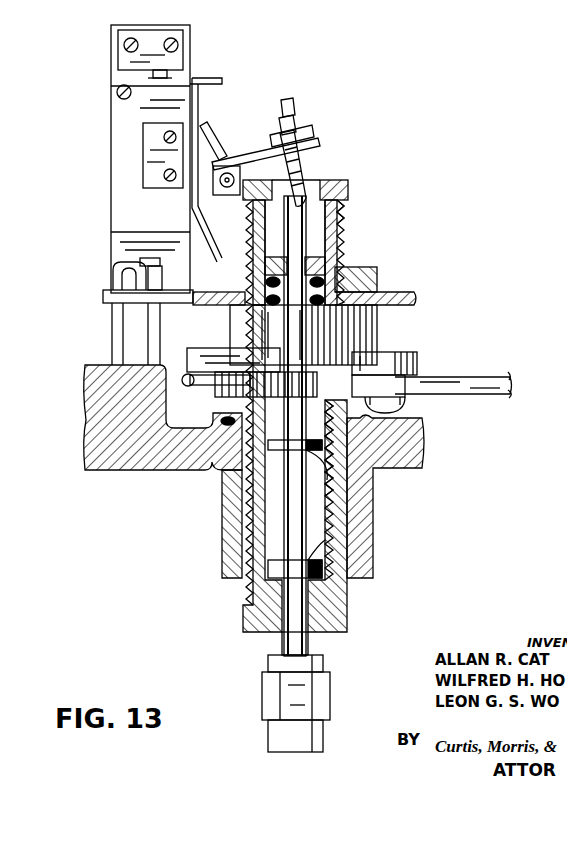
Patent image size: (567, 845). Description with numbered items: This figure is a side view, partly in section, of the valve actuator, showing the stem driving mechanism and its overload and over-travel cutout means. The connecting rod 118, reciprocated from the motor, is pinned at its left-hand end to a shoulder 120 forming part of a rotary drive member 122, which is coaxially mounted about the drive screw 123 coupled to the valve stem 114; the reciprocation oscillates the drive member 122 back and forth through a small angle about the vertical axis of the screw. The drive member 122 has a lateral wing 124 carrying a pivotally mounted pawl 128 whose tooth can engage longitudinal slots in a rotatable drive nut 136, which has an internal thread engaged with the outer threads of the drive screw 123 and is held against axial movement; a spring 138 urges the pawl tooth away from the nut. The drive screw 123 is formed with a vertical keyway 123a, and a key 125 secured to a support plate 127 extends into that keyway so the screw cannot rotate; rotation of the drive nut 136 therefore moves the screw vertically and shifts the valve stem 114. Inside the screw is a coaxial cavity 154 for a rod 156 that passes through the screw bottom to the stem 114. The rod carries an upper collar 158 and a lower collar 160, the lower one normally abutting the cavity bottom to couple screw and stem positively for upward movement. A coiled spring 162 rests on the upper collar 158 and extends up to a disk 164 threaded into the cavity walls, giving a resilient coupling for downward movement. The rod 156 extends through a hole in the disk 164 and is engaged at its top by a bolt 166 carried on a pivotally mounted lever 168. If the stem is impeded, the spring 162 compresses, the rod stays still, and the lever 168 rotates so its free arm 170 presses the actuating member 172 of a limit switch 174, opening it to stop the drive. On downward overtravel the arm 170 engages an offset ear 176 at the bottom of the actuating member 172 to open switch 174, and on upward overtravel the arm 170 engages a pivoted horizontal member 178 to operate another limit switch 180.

The valve stem 114 is at (331, 688).
The connecting rod 118 is at (480, 392).
The shoulder 120 is at (418, 357).
The rotary drive member 122 is at (380, 345).
The drive screw 123 is at (347, 612).
The vertical keyway 123a is at (347, 215).
The lateral wing 124 is at (245, 352).
The key 125 is at (360, 266).
The support plate 127 is at (394, 292).
The pawl 128 is at (178, 470).
The rotatable drive nut 136 is at (388, 402).
The spring 138 is at (184, 376).
The coaxial cavity 154 is at (275, 540).
The rod 156 is at (284, 515).
The upper collar 158 is at (345, 498).
The lower collar 160 is at (330, 545).
The coiled spring 162 is at (377, 330).
The disk 164 is at (252, 262).
The bolt 166 is at (305, 162).
The lever 168 is at (250, 145).
The free arm 170 is at (220, 150).
The actuating member 172 is at (190, 188).
The limit switch 174 is at (147, 125).
The offset ear 176 is at (212, 245).
The pivoted horizontal member 178 is at (215, 78).
The limit switch 180 is at (175, 57).